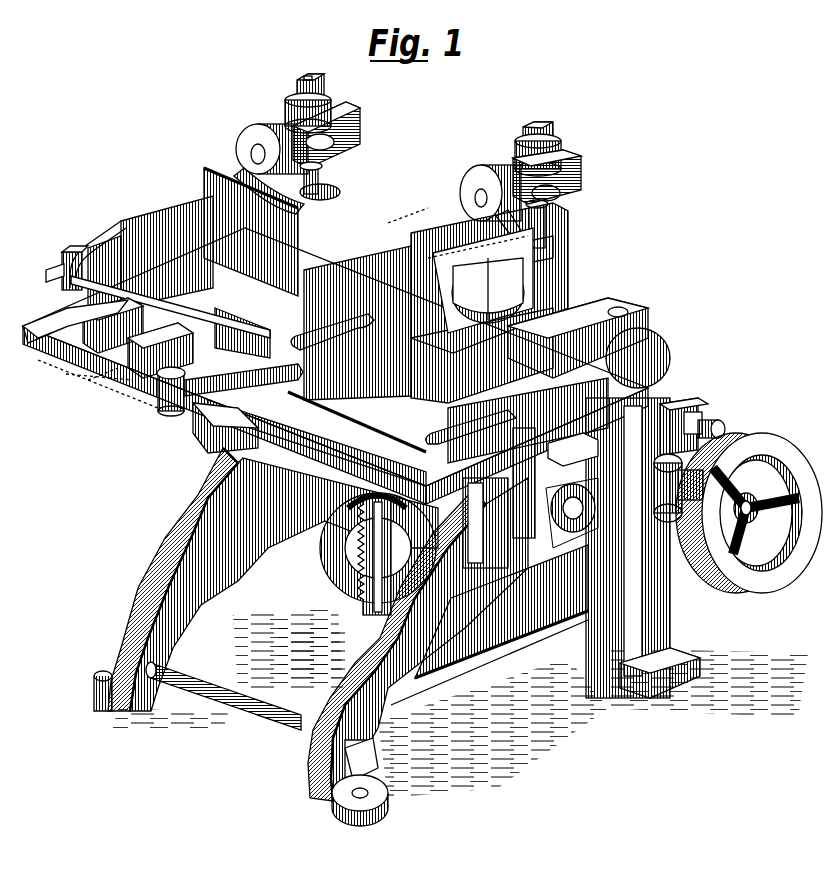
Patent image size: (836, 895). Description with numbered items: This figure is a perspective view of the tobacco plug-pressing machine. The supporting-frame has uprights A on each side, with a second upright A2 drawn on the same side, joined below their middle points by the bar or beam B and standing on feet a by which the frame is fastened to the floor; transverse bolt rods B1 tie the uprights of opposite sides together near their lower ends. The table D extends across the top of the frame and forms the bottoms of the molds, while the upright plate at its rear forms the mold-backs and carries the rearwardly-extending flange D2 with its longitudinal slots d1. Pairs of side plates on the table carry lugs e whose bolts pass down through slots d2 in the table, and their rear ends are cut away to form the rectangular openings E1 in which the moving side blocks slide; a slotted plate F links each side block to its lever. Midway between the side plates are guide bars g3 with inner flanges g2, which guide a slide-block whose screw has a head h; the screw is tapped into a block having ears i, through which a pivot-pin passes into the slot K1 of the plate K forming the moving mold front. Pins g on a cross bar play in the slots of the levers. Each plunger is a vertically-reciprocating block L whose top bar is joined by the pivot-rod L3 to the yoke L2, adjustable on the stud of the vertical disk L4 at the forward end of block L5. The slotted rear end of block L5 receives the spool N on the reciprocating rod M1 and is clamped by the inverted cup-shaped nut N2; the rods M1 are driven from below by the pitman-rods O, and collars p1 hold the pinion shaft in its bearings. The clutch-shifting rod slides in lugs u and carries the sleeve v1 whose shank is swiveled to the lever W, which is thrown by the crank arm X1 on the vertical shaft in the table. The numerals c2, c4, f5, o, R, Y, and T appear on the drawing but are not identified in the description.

The table D is at (180, 400).
The upright A is at (273, 579).
The frame (center leg and column) A2 is at (489, 599).
The foot or lug a is at (92, 700).
The bar or beam B is at (424, 625).
The transverse bolt rod or bar B1 is at (248, 708).
The rectangular opening E1 is at (154, 234).
The pin g is at (64, 240).
The lug f5 is at (40, 264).
The ear or lug i is at (170, 307).
The head of screw h is at (113, 325).
The lug or flange e is at (160, 340).
The plate c4 is at (60, 305).
The guide block or bar g3 is at (93, 385).
The flange or rib g2 is at (96, 383).
The slot d2 is at (97, 378).
The crank or lever arm X1 is at (152, 403).
The lever W is at (220, 455).
The plate K is at (251, 232).
The vertical disk L4 is at (262, 118).
The block L5 is at (334, 135).
The inverted cup-shaped nut N2 is at (310, 80).
The spool N is at (444, 170).
The vertically-reciprocating rod M1 is at (437, 202).
The yoke L2 is at (410, 178).
The pivot-rod L3 is at (507, 233).
The vertically-reciprocating block L is at (556, 258).
The plate c2 is at (480, 231).
The longitudinal slot d1 is at (408, 209).
The rearwardly-extending horizontal flange D2 is at (590, 306).
The plate F is at (428, 379).
The slot K1 is at (485, 523).
The pitman-rod O is at (555, 483).
The cam boss o is at (572, 513).
The gear R is at (312, 555).
The rack Y is at (340, 600).
The lug u is at (682, 402).
The sleeve v1 is at (692, 416).
The collar p1 is at (676, 493).
The pulley T is at (749, 520).